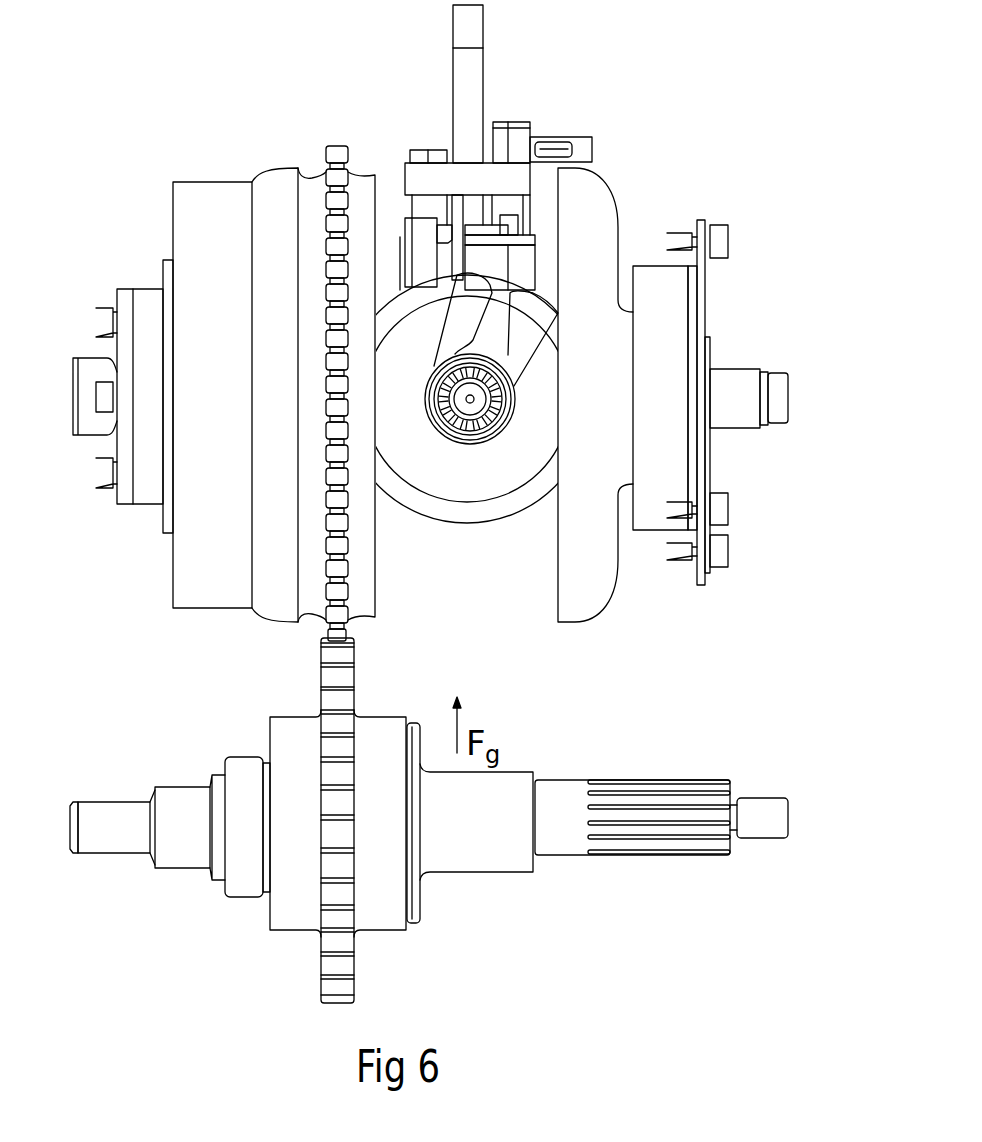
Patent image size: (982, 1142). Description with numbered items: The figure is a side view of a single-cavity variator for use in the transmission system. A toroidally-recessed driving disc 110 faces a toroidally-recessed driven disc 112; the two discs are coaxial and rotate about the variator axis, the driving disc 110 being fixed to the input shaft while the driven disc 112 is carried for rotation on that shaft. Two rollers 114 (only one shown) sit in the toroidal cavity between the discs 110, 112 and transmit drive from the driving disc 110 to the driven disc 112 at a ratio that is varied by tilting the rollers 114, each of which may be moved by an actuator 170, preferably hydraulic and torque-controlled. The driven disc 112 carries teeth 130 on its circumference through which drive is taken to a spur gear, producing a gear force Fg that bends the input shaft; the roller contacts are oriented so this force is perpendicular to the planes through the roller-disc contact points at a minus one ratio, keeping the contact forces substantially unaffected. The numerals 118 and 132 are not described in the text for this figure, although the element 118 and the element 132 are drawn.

The driving disc 110 is at (597, 590).
The driven disc 112 is at (375, 603).
The roller 114 is at (488, 483).
The axle stub 118 is at (743, 368).
The teeth 130 is at (338, 550).
The sprocket 132 is at (343, 985).
The actuator 170 is at (470, 97).